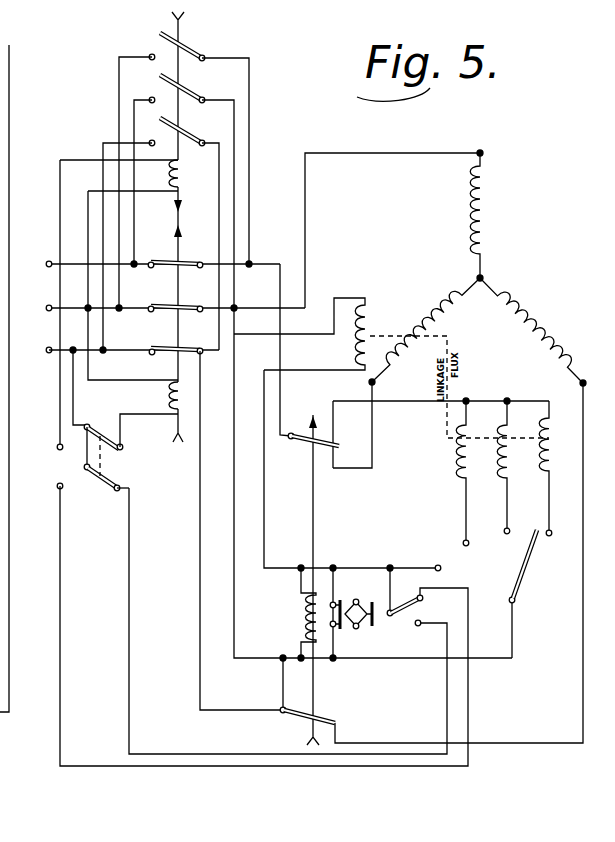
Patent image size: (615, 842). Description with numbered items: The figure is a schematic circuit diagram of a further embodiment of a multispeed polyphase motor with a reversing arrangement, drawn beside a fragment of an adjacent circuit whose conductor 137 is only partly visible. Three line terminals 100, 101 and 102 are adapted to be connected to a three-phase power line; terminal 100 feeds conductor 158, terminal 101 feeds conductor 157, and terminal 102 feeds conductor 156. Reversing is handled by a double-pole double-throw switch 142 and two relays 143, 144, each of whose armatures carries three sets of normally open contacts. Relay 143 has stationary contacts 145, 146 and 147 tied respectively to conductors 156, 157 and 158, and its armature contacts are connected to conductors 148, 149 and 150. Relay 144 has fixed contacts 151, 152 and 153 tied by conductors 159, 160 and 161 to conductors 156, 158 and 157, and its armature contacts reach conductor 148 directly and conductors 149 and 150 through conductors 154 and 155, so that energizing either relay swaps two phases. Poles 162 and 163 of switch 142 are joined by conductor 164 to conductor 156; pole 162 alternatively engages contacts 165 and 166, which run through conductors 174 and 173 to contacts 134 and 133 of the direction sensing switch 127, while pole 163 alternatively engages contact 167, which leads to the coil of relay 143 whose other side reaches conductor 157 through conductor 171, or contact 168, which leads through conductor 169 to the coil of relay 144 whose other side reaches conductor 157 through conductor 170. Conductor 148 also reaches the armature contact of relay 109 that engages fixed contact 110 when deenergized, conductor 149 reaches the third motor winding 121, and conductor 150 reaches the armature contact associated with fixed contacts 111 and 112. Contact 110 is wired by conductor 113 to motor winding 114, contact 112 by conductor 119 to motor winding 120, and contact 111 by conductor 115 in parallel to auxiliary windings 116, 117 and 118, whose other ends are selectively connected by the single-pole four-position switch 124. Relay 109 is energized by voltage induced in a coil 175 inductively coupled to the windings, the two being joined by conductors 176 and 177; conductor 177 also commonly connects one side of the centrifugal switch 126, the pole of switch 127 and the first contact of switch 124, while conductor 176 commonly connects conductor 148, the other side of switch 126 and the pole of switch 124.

The conductor of adjacent figure 137 is at (9, 721).
The terminal 100 is at (47, 265).
The terminal 101 is at (48, 312).
The terminal 102 is at (48, 353).
The relay 109 is at (294, 618).
The fixed relay contact 110 is at (340, 726).
The fixed relay contact 111 is at (336, 419).
The fixed relay contact 112 is at (344, 450).
The conductor 113 is at (515, 742).
The motor winding 114 is at (535, 319).
The conductor 115 is at (415, 402).
The auxiliary winding 116 is at (458, 463).
The auxiliary winding 117 is at (498, 465).
The auxiliary winding 118 is at (542, 463).
The conductor 119 is at (352, 468).
The motor winding 120 is at (408, 326).
The third motor winding 121 is at (477, 212).
The single-pole four-position switch 124 is at (540, 576).
The centrifugal switch 126 is at (353, 638).
The direction sensing switch 127 is at (405, 632).
The contact 133 is at (405, 568).
The contact 134 is at (419, 623).
The double-pole double-throw switch 142 is at (118, 470).
The relay 143 is at (168, 399).
The relay 144 is at (196, 184).
The stationary contact 145 is at (152, 356).
The stationary contact 146 is at (149, 311).
The stationary contact 147 is at (149, 268).
The conductor 148 is at (200, 366).
The conductor 149 is at (305, 254).
The conductor 150 is at (275, 253).
The fixed contact 151 is at (153, 146).
The fixed contact 152 is at (149, 100).
The fixed contact 153 is at (151, 55).
The conductor 154 is at (234, 170).
The conductor 155 is at (249, 83).
The conductor 156 is at (165, 246).
The conductor 157 is at (70, 307).
The conductor 158 is at (70, 265).
The conductor 159 is at (103, 146).
The conductor 160 is at (134, 220).
The conductor 161 is at (119, 80).
The pole 162 is at (100, 492).
The pole 163 is at (101, 437).
The conductor 164 is at (72, 397).
The contact 165 is at (119, 490).
The contact 166 is at (59, 487).
The contact 167 is at (120, 449).
The contact 168 is at (58, 447).
The conductor 169 is at (60, 176).
The conductor 170 is at (95, 182).
The conductor 171 is at (133, 344).
The conductor 173 is at (88, 630).
The conductor 174 is at (129, 640).
The coil 175 is at (366, 312).
The conductor 176 is at (229, 530).
The conductor 177 is at (264, 522).